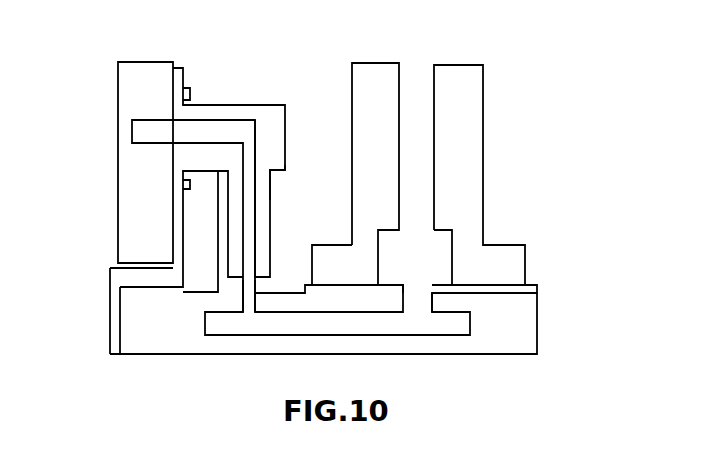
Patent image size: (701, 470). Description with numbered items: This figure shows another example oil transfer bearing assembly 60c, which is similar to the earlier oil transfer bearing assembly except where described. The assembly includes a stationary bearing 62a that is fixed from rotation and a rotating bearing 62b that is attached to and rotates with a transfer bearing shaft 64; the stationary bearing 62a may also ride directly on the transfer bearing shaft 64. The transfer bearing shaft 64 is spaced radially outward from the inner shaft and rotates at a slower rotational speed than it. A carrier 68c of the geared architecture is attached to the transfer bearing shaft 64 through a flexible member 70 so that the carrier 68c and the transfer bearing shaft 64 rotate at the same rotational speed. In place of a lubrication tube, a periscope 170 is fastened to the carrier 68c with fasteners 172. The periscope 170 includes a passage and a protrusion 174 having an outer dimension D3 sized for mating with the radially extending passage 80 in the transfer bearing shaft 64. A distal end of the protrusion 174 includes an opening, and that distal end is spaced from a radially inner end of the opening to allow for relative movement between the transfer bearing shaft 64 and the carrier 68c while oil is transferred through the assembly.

The oil transfer bearing assembly 60c is at (509, 60).
The carrier 68c is at (118, 101).
The flexible member 70 is at (115, 303).
The periscope 170 is at (264, 105).
The fasteners 172 is at (191, 93).
The protrusion 174 is at (272, 183).
The radially extending passage 80 is at (253, 290).
The transfer bearing shaft 64 is at (500, 343).
The stationary bearing 62a is at (484, 108).
The rotating bearing 62b is at (538, 292).
The outer dimension D3 is at (197, 209).